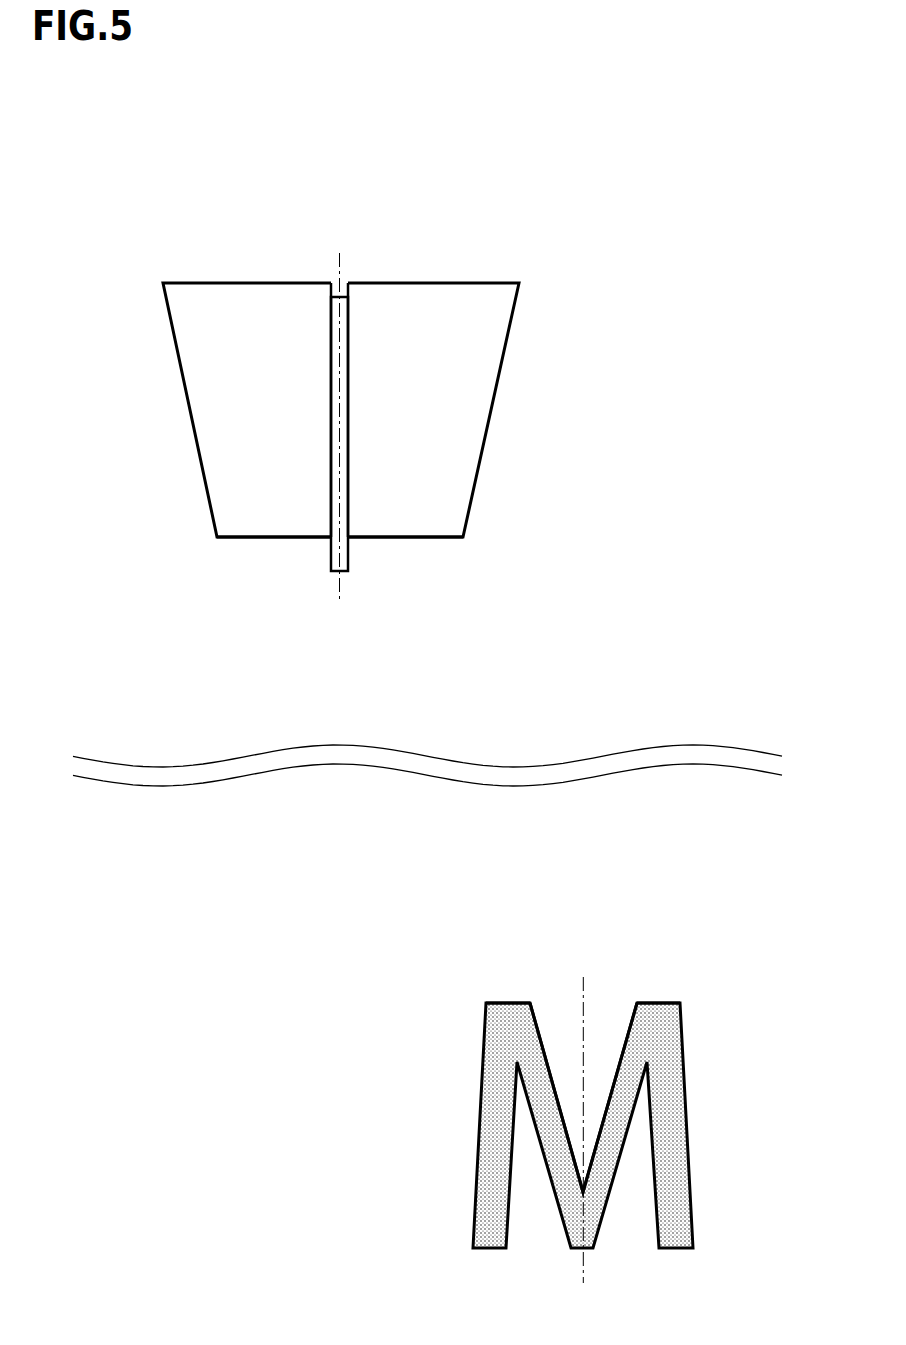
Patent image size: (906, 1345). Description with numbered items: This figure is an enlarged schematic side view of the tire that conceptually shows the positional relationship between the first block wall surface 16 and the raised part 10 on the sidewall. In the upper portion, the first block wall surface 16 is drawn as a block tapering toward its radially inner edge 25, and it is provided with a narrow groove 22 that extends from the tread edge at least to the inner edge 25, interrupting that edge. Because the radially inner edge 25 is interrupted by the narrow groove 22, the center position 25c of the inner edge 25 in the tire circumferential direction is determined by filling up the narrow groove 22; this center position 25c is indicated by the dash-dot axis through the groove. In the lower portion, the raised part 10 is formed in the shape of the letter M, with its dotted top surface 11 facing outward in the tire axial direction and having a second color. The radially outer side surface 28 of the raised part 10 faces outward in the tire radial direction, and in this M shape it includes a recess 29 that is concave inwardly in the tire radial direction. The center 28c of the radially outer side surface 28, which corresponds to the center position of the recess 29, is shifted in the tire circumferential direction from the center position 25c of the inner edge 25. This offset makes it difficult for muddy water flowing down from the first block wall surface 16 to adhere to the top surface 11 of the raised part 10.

The raised part 10 is at (596, 1081).
The top surface 11 is at (672, 1168).
The first block wall surface 16 is at (253, 405).
The narrow groove 22 is at (345, 502).
The radially inner edge 25 is at (415, 540).
The center position 25c is at (338, 268).
The radially outer side surface 28 is at (507, 1003).
The center 28c is at (585, 995).
The recess 29 is at (551, 1002).